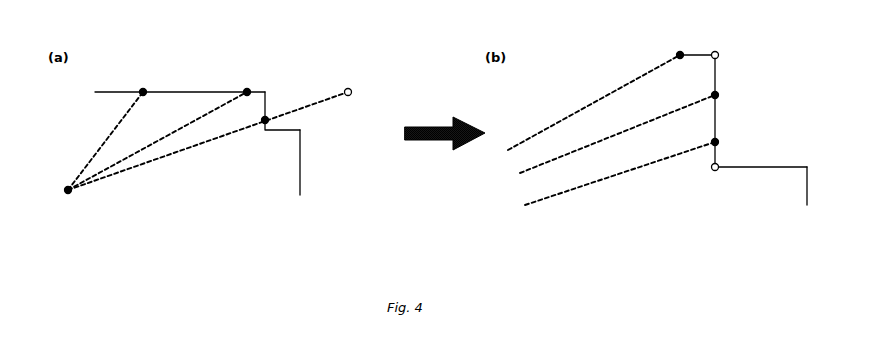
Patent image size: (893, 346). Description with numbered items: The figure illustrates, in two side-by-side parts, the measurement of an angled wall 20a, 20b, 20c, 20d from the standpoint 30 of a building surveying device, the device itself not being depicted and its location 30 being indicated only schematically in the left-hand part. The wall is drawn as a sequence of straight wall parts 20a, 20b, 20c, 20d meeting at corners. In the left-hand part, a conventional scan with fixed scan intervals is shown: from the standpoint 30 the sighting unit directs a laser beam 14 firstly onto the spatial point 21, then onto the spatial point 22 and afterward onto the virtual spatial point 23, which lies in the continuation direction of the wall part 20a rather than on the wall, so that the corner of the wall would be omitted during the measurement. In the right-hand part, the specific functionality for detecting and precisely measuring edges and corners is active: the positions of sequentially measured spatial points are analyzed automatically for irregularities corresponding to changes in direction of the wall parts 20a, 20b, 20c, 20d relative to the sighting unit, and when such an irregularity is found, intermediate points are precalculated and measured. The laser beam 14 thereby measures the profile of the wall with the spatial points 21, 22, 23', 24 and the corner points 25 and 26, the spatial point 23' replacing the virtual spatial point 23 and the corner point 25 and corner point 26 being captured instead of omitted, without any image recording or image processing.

The laser beam 14 is at (374, 139).
The wall part 20a is at (667, 52).
The wall part 20b is at (266, 97).
The wall part 20c is at (268, 132).
The wall part 20d is at (301, 167).
The spatial point 21 is at (163, 70).
The spatial point 22 is at (488, 49).
The virtual spatial point 23 is at (368, 70).
The spatial point 23' is at (520, 127).
The spatial point 24 is at (719, 89).
The corner point 25 is at (717, 51).
The corner point 26 is at (718, 161).
The standpoint 30 is at (46, 202).